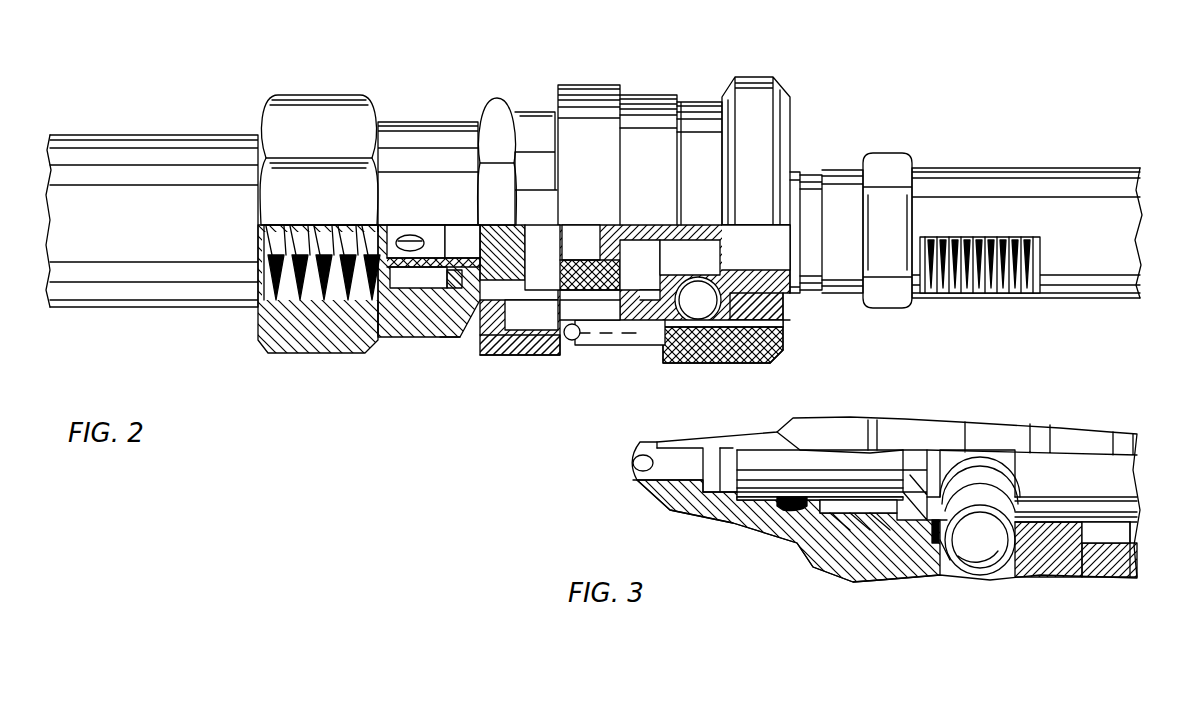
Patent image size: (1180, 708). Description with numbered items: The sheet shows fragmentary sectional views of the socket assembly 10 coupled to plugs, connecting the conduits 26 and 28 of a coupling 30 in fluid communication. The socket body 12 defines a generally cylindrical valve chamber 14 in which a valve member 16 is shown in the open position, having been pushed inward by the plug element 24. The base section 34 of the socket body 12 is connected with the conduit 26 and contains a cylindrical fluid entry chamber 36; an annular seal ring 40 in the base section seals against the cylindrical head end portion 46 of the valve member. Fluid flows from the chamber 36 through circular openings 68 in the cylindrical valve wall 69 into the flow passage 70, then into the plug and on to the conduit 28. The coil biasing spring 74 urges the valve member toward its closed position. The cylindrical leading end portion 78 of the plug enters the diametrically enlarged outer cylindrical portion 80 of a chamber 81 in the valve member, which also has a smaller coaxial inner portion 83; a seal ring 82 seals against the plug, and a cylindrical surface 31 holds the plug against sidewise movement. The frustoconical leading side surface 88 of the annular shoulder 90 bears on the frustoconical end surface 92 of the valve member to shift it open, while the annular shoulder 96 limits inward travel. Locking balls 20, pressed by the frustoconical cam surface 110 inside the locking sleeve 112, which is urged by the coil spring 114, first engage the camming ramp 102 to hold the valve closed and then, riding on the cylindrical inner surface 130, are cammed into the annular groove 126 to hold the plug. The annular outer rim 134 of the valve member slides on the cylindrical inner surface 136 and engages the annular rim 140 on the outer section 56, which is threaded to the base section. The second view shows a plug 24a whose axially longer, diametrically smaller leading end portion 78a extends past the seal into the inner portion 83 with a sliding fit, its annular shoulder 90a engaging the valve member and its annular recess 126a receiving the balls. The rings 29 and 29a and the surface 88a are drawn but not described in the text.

In FIG. 2, the socket assembly 10 is at (398, 122).
In FIG. 2, the socket body 12 is at (450, 346).
In FIG. 2, the valve chamber 14 is at (620, 340).
In FIG. 2, the valve member 16 is at (383, 228).
In FIG. 3, the valve member 16 is at (703, 520).
In FIG. 2, the locking balls 20 is at (700, 330).
In FIG. 3, the locking balls 20 is at (995, 560).
In FIG. 2, the plug element 24 is at (826, 159).
In FIG. 3, the plug 24a is at (1122, 421).
In FIG. 2, the conduit 26 is at (164, 135).
In FIG. 2, the conduit 28 is at (1020, 168).
In FIG. 2, the ring 29 is at (796, 172).
In FIG. 3, the ring 29a is at (1105, 540).
In FIG. 2, the coupling 30 is at (640, 80).
In FIG. 2, the cylindrical surface 31 is at (745, 300).
In FIG. 3, the cylindrical surface 31 is at (1050, 530).
In FIG. 2, the base section 34 is at (345, 345).
In FIG. 2, the fluid entry chamber 36 is at (424, 330).
In FIG. 2, the annular seal ring 40 is at (433, 288).
In FIG. 2, the head end portion 46 is at (400, 235).
In FIG. 2, the outer section 56 is at (785, 319).
In FIG. 3, the outer section 56 is at (1098, 572).
In FIG. 2, the circular openings 68 is at (414, 240).
In FIG. 2, the cylindrical valve wall 69 is at (493, 248).
In FIG. 2, the flow passage 70 is at (456, 245).
In FIG. 2, the coil biasing spring 74 is at (514, 374).
In FIG. 2, the leading end portion 78 is at (600, 214).
In FIG. 3, the leading end portion 78a is at (828, 457).
In FIG. 2, the outer cylindrical portion 80 is at (610, 335).
In FIG. 3, the outer cylindrical portion 80 is at (865, 516).
In FIG. 3, the chamber 81 is at (732, 456).
In FIG. 2, the seal ring 82 is at (592, 272).
In FIG. 3, the seal ring 82 is at (797, 514).
In FIG. 2, the inner portion 83 is at (545, 272).
In FIG. 3, the inner portion 83 is at (755, 505).
In FIG. 2, the frustoconical leading side surface 88 is at (648, 240).
In FIG. 3, the flange 88a is at (912, 455).
In FIG. 2, the annular shoulder 90 is at (665, 262).
In FIG. 3, the annular shoulder 90a is at (940, 552).
In FIG. 2, the frustoconical end surface 92 is at (640, 340).
In FIG. 2, the annular shoulder 96 is at (503, 252).
In FIG. 3, the camming ramp 102 is at (925, 540).
In FIG. 2, the frustoconical cam surface 110 is at (740, 358).
In FIG. 2, the locking sleeve 112 is at (825, 354).
In FIG. 2, the coil spring 114 is at (664, 310).
In FIG. 2, the annular groove 126 is at (725, 258).
In FIG. 3, the annular recess 126a is at (1000, 462).
In FIG. 2, the cylindrical inner surface 130 is at (680, 330).
In FIG. 2, the annular outer rim 134 is at (548, 305).
In FIG. 2, the cylindrical inner surface 136 is at (470, 290).
In FIG. 2, the annular rim 140 is at (697, 300).